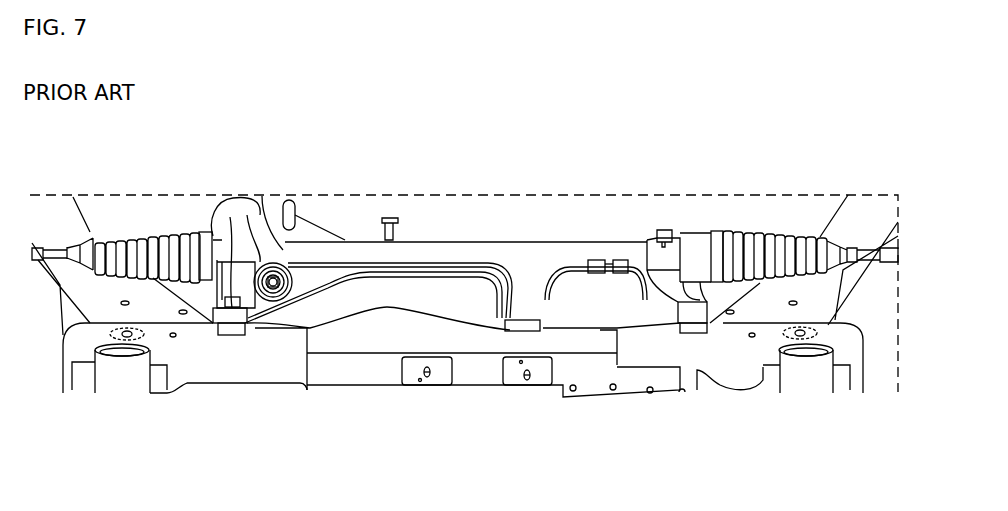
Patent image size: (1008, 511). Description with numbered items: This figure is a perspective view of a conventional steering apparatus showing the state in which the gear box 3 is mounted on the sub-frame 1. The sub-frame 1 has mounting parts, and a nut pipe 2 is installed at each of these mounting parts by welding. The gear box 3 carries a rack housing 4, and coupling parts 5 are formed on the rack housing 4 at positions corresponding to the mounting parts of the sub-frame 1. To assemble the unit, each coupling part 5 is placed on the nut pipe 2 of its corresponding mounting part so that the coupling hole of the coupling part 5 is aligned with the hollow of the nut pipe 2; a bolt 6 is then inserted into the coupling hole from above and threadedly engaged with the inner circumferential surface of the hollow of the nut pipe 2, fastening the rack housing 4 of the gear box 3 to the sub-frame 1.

The sub-frame 1 is at (465, 404).
The nut pipe 2 is at (235, 336).
The gear box 3 is at (531, 222).
The rack housing 4 is at (491, 255).
The coupling part 5 is at (215, 236).
The bolt 6 is at (250, 215).